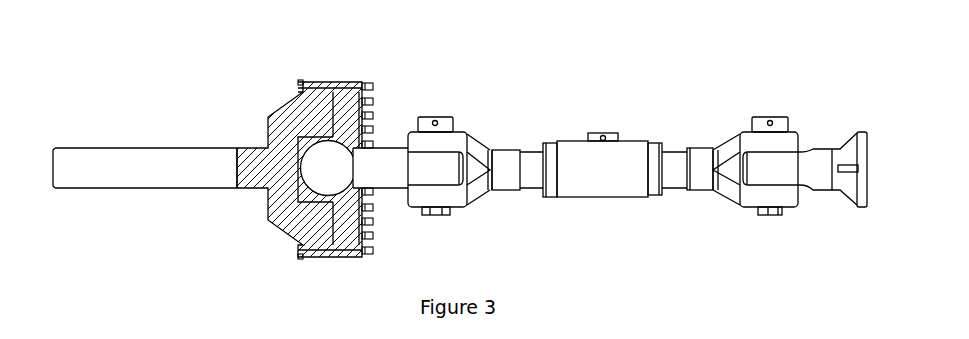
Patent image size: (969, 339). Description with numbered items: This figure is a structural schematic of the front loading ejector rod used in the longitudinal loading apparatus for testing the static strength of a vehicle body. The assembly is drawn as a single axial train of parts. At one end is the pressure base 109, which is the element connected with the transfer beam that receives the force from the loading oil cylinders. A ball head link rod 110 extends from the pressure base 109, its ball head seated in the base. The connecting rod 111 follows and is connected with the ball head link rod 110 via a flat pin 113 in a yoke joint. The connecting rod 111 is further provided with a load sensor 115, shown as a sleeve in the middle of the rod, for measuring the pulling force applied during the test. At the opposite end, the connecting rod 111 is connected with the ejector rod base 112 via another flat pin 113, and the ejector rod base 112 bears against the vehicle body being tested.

The pressure base 109 is at (283, 125).
The ball head link rod 110 is at (388, 168).
The flat pin 113 is at (445, 123).
The connecting rod 111 is at (507, 172).
The load sensor 115 is at (622, 163).
The ejector rod base 112 is at (808, 172).